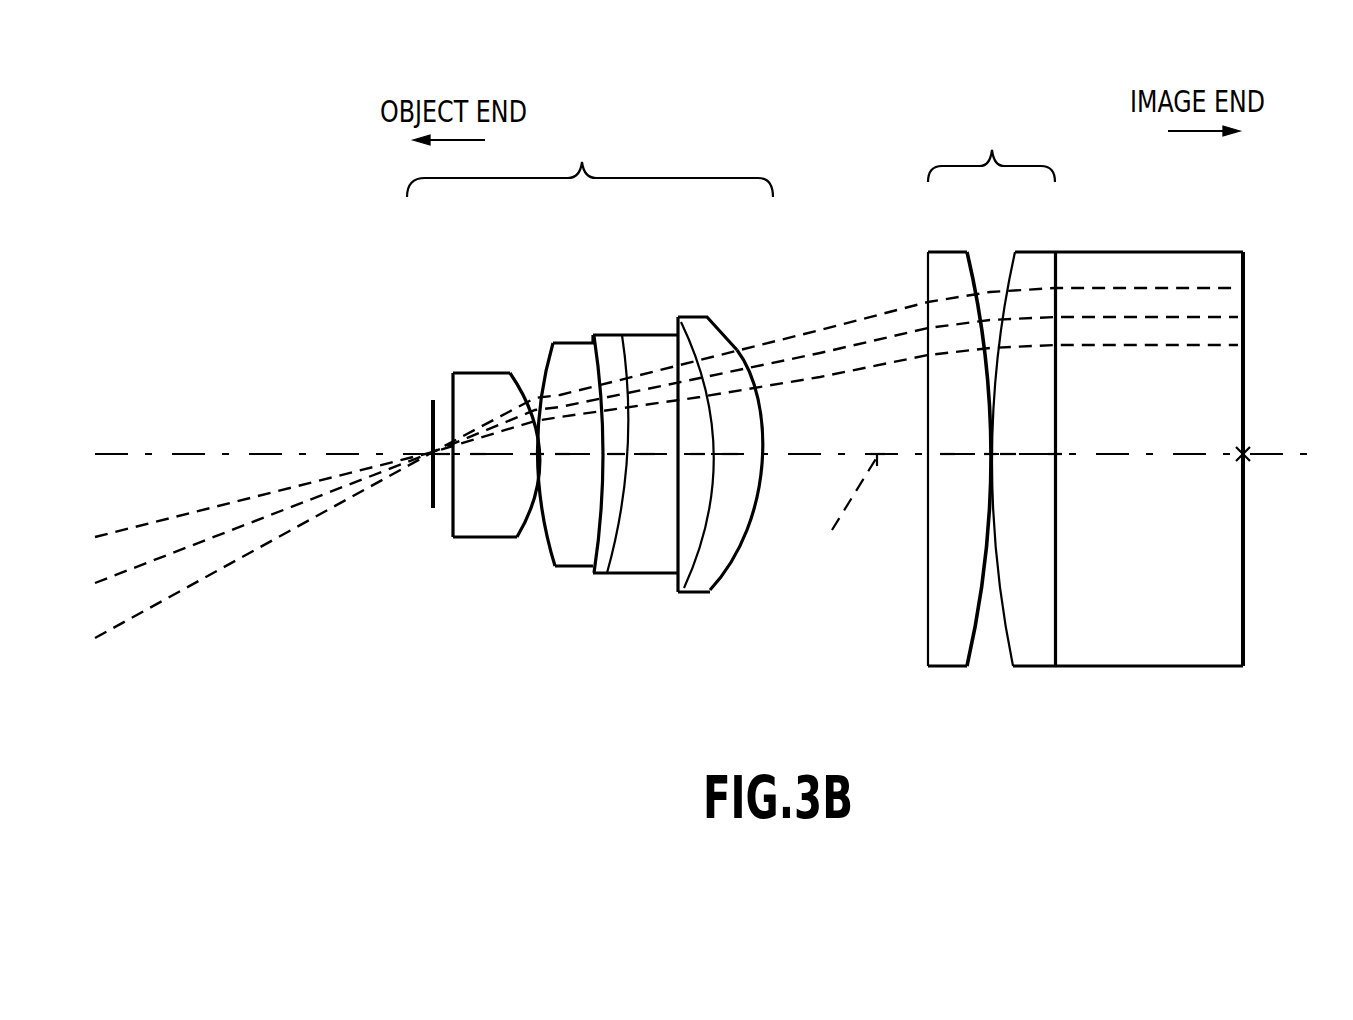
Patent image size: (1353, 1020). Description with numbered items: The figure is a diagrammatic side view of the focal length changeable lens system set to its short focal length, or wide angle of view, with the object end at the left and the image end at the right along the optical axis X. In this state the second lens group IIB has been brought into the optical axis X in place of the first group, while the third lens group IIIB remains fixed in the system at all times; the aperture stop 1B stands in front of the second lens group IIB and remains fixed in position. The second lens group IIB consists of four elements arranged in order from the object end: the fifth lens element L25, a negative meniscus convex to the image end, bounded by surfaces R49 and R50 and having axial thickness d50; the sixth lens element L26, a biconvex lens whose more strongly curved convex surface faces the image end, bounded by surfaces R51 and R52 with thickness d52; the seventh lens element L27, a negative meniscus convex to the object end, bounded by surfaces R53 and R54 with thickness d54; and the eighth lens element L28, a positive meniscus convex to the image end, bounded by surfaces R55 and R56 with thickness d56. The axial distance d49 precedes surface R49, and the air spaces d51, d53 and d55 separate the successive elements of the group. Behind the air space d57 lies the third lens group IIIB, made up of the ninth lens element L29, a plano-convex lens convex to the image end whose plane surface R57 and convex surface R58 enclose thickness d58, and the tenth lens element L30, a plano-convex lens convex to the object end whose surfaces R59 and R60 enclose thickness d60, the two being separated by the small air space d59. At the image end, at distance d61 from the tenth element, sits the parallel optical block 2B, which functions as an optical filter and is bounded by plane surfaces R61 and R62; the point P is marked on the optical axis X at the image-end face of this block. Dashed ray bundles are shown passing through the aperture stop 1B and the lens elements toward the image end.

The aperture stop 1B is at (433, 500).
The parallel optical block 2B is at (1195, 423).
The image point P is at (1247, 452).
The optical axis X is at (844, 500).
The second lens group IIB is at (590, 159).
The third lens group IIIB is at (991, 150).
The fifth lens element L25 is at (459, 416).
The sixth lens element L26 is at (542, 431).
The seventh lens element L27 is at (638, 410).
The eighth lens element L28 is at (762, 444).
The ninth lens element L29 is at (915, 461).
The tenth lens element L30 is at (1055, 478).
The lens surface radius R49 is at (453, 503).
The lens surface radius R50 is at (490, 493).
The lens surface radius R51 is at (552, 548).
The lens surface radius R52 is at (575, 499).
The lens surface radius R53 is at (622, 480).
The lens surface radius R54 is at (680, 545).
The lens surface radius R55 is at (704, 503).
The lens surface radius R56 is at (755, 513).
The lens surface radius R57 is at (926, 643).
The lens surface radius R58 is at (960, 497).
The lens surface radius R59 is at (1006, 667).
The lens surface radius R60 is at (1058, 666).
The lens surface radius R61 is at (1050, 543).
The lens surface radius R62 is at (1250, 459).
The axial distance d49 is at (444, 442).
The axial distance d50 is at (478, 458).
The axial distance d51 is at (537, 452).
The axial distance d52 is at (562, 458).
The axial distance d53 is at (621, 335).
The axial distance d54 is at (646, 458).
The axial distance d55 is at (703, 382).
The axial distance d56 is at (730, 455).
The axial distance d57 is at (877, 455).
The axial distance d58 is at (947, 453).
The axial distance d59 is at (990, 458).
The axial distance d60 is at (1008, 454).
The axial distance d61 is at (1053, 455).